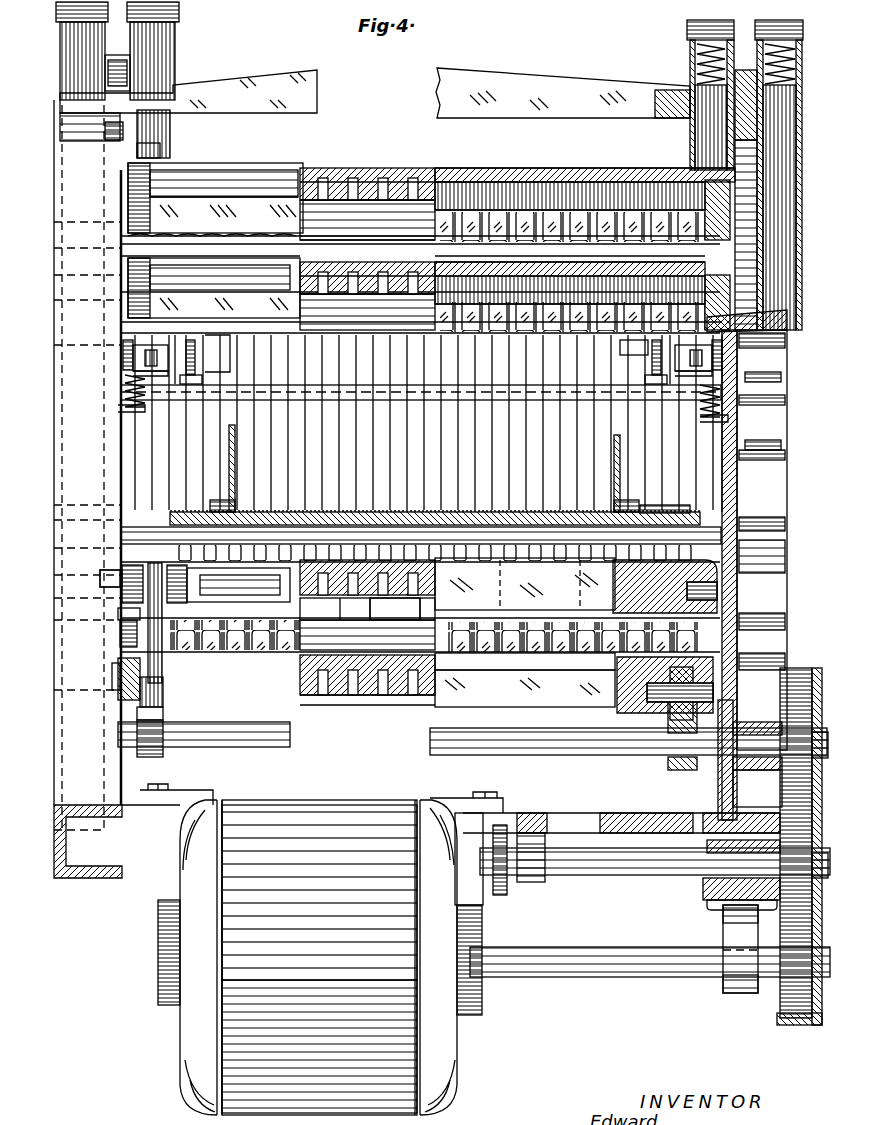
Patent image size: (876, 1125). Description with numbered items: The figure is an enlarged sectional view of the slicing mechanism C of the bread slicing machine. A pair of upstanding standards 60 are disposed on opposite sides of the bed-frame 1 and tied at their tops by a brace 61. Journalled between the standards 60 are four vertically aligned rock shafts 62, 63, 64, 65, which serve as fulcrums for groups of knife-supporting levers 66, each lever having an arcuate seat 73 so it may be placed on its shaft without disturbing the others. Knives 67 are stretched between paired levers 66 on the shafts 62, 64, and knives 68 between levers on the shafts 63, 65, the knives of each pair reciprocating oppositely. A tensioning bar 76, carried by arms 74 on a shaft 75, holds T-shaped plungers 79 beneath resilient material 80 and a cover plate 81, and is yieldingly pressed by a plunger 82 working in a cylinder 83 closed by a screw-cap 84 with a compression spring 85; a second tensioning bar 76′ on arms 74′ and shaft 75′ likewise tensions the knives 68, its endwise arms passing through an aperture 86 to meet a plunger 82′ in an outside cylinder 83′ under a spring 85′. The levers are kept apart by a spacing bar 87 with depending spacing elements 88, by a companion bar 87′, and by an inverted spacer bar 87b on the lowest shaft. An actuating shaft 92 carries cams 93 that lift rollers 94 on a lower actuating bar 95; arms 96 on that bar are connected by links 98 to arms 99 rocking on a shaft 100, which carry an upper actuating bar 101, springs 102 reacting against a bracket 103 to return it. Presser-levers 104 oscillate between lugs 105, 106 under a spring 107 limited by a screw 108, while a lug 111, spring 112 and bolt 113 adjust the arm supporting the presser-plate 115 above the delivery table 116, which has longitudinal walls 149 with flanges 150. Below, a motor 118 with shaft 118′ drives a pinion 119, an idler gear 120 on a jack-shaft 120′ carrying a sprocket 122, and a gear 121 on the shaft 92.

The bed-frame 1 is at (102, 878).
The standards 60 is at (722, 466).
The brace 61 is at (300, 84).
The rock shaft 62 is at (660, 240).
The rock shaft 63 is at (648, 345).
The rock shaft 64 is at (410, 598).
The rock shaft 65 is at (345, 698).
The knife-supporting levers 66 is at (326, 695).
The knives 67 is at (440, 440).
The knife 68 is at (350, 462).
The arcuate notch or seat 73 is at (366, 285).
The arms 74 is at (212, 246).
The arms 74′ is at (214, 288).
The shaft 75 is at (240, 175).
The shaft 75′ is at (240, 292).
The tensioning bar 76 is at (234, 238).
The tensioning bar 76′ is at (204, 360).
The T-shaped plungers 79 is at (560, 285).
The resilient material 80 is at (617, 193).
The cover plate 81 is at (677, 263).
The plunger 82 is at (662, 140).
The plunger 82′ is at (792, 300).
The cylinder 83 is at (664, 78).
The cylinder 83′ is at (812, 258).
The screw-cap 84 is at (816, 30).
The compression spring 85 is at (697, 55).
The compression spring 85′ is at (796, 62).
The aperture 86 is at (787, 342).
The spacing bar 87 is at (322, 598).
The hatched plate 87′ is at (367, 257).
The spacer bar 87b is at (367, 710).
The spacing elements 88 is at (410, 285).
The actuating shaft 92 is at (580, 748).
The cams 93 is at (660, 776).
The rollers 94 is at (668, 718).
The lower actuating bar 95 is at (575, 703).
The arms 96 is at (118, 690).
The links 98 is at (145, 655).
The arms 99 is at (118, 577).
The shaft 100 is at (248, 580).
The actuating bar 101 is at (576, 585).
The springs 102 is at (120, 635).
The bracket 103 is at (118, 612).
The presser-levers 104 is at (690, 372).
The lug 105 is at (700, 420).
The lug 106 is at (744, 368).
The spring 107 is at (740, 422).
The stop or screw 108 is at (133, 348).
The inturned lug 111 is at (650, 384).
The spring 112 is at (655, 368).
The bolt 113 is at (665, 384).
The presser-plate 115 is at (545, 403).
The delivery table 116 is at (665, 495).
The motor 118 is at (182, 1045).
The motor shaft 118′ is at (585, 970).
The pinion 119 is at (778, 1012).
The idler gear 120 is at (790, 910).
The jack-shaft 120′ is at (608, 876).
The gear 121 is at (780, 782).
The sprocket 122 is at (500, 895).
The longitudinal walls 149 is at (620, 460).
The flange 150 is at (630, 505).
The slicing mechanism C is at (780, 412).